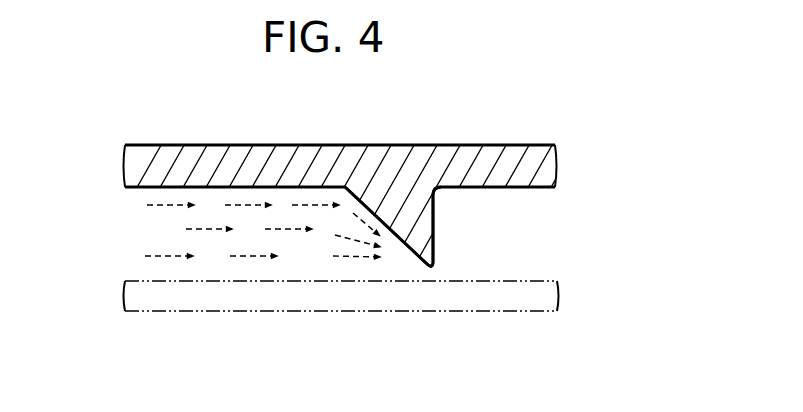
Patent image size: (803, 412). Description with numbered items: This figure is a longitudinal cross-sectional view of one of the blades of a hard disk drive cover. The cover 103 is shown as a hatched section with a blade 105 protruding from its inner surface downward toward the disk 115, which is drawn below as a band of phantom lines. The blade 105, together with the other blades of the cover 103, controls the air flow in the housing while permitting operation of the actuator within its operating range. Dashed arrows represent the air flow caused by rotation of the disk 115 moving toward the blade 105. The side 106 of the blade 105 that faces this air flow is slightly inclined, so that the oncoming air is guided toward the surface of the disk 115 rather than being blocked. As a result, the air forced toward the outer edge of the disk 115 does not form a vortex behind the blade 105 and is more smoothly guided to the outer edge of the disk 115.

The cover 103 is at (270, 145).
The first blade 105 is at (424, 216).
The side of first blade 106 is at (403, 242).
The disk 115 is at (483, 312).